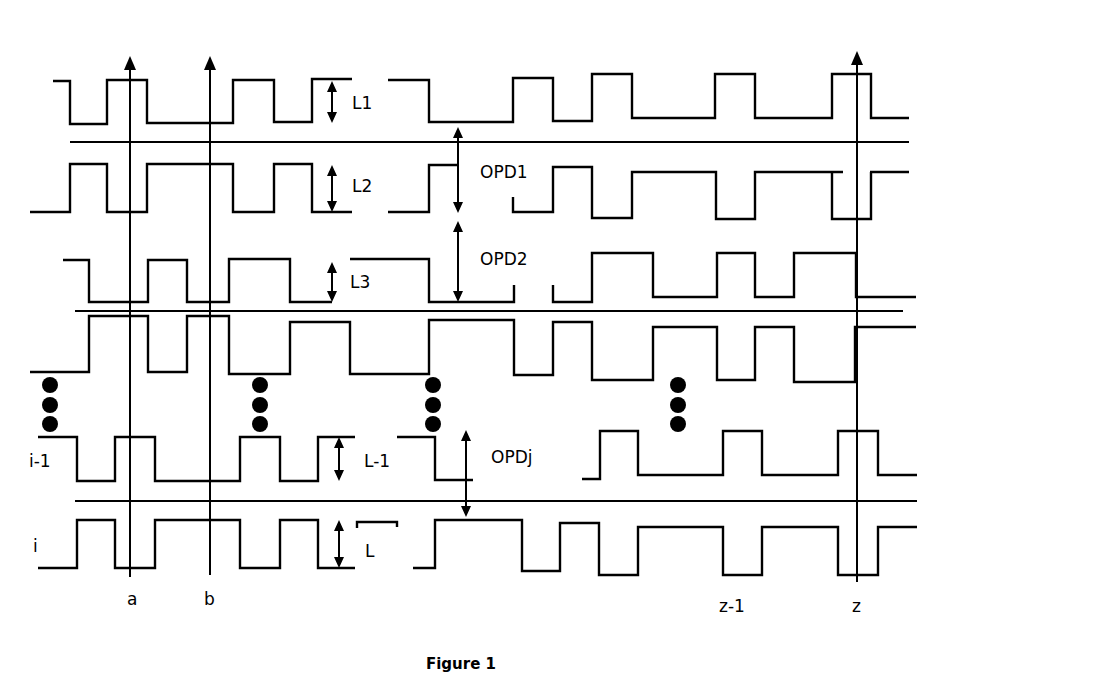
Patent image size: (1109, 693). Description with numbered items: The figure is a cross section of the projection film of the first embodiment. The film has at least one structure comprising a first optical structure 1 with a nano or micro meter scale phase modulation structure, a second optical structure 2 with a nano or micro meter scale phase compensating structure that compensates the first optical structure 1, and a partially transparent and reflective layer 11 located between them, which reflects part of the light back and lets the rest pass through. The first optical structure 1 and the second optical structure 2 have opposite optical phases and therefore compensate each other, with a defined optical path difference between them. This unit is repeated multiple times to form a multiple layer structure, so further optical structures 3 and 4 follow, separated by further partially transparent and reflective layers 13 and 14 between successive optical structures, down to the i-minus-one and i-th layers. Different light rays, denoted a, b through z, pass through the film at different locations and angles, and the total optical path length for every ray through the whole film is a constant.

The first optical structure 1 is at (469, 98).
The second optical structure 2 is at (469, 191).
The third line pattern 3 is at (478, 275).
The fourth line pattern 4 is at (473, 349).
The partially transparent and reflective layer 11 is at (470, 141).
The separation line between third and fourth line patterns 13 is at (468, 304).
The separation line between line patterns i-1 and i 14 is at (475, 501).